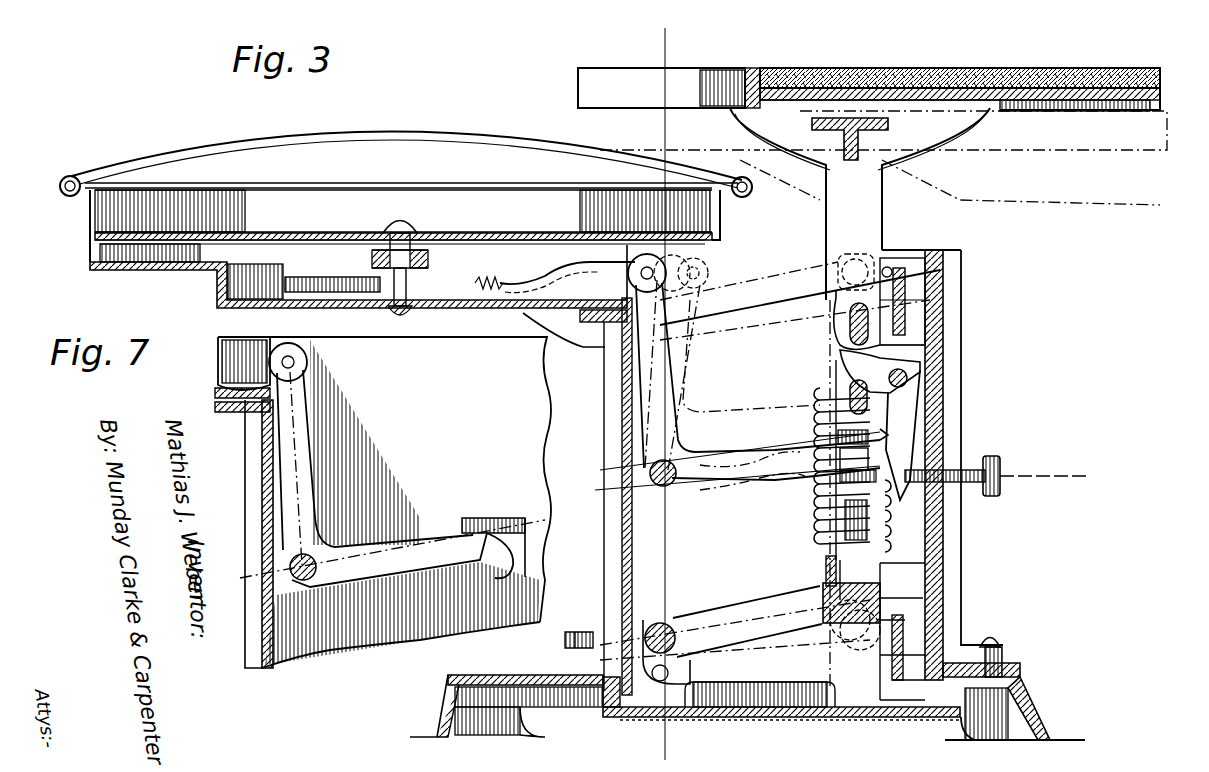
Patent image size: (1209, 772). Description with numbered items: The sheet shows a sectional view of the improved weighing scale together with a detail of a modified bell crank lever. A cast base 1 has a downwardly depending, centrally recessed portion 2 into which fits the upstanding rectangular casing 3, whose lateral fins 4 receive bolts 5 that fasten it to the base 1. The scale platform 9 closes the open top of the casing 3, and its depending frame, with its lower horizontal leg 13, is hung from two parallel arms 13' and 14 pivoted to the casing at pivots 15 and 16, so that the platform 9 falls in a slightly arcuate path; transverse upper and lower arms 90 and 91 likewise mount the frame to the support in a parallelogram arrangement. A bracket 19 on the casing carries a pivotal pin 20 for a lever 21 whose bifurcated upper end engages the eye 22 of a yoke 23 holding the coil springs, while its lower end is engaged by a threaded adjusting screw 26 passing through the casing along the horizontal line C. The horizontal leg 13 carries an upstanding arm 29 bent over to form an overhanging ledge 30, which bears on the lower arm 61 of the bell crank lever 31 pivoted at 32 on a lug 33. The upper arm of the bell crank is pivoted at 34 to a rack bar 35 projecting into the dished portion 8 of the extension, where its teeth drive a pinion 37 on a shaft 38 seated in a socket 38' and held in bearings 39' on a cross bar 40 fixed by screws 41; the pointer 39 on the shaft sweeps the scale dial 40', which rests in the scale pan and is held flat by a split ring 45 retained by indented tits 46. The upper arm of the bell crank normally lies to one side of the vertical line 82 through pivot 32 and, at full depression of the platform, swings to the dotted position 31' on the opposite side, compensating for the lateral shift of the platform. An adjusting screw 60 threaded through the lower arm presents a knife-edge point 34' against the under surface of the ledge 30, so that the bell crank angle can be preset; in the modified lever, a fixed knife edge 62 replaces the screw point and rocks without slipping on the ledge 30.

In FIG. 3, the base 1 is at (1045, 707).
In FIG. 3, the centrally recessed portion 2 is at (743, 713).
In FIG. 3, the casing 3 is at (943, 575).
In FIG. 3, the lateral fins 4 is at (977, 667).
In FIG. 3, the bolts 5 is at (988, 637).
In FIG. 3, the dished portion 8 is at (222, 283).
In FIG. 3, the scale platform 9 is at (1162, 97).
In FIG. 3, the lower horizontal leg 13 is at (841, 676).
In FIG. 3, the parallel arm 13' is at (945, 297).
In FIG. 3, the parallel arm 14 is at (903, 627).
In FIG. 3, the pivot 15 is at (912, 318).
In FIG. 3, the pivot 16 is at (880, 655).
In FIG. 3, the bracket 19 is at (918, 365).
In FIG. 3, the pivotal pin 20 is at (908, 378).
In FIG. 3, the lever 21 is at (905, 418).
In FIG. 3, the eye 22 is at (838, 333).
In FIG. 3, the yoke 23 is at (848, 319).
In FIG. 3, the threaded adjusting screw 26 is at (963, 476).
In FIG. 3, the upstanding arm 29 is at (820, 572).
In FIG. 3, the overhanging ledge 30 is at (820, 430).
In FIG. 7, the overhanging ledge 30 is at (483, 523).
In FIG. 3, the bell crank lever 31 is at (727, 380).
In FIG. 7, the bell crank lever 31 is at (375, 460).
In FIG. 3, the bell crank lever shifted position 31' is at (744, 377).
In FIG. 3, the bell crank pivot 32 is at (650, 478).
In FIG. 7, the bell crank pivot 32 is at (316, 569).
In FIG. 3, the lug 33 is at (630, 512).
In FIG. 3, the rack bar pivot 34 is at (635, 319).
In FIG. 7, the rack bar pivot 34 is at (312, 362).
In FIG. 3, the screw point 34' is at (828, 400).
In FIG. 3, the rack bar 35 is at (556, 270).
In FIG. 3, the pinion 37 is at (368, 262).
In FIG. 3, the shaft 38 is at (412, 232).
In FIG. 3, the socket 38' is at (367, 301).
In FIG. 3, the pointer 39 is at (400, 194).
In FIG. 3, the bearings 39' is at (418, 258).
In FIG. 3, the cross bar 40 is at (422, 265).
In FIG. 3, the scale dial 40' is at (407, 174).
In FIG. 3, the scale pan 41 is at (95, 244).
In FIG. 3, the split ring 45 is at (100, 232).
In FIG. 3, the indented tits 46 is at (90, 228).
In FIG. 3, the adjusting screw 60 is at (815, 500).
In FIG. 3, the lower arm of bell crank lever 61 is at (745, 452).
In FIG. 7, the lower arm of bell crank lever 61 is at (390, 560).
In FIG. 7, the knife edge point 62 is at (490, 570).
In FIG. 3, the vertical line 82 is at (666, 42).
In FIG. 3, the upper arm 90 is at (785, 265).
In FIG. 3, the lower arm 91 is at (722, 614).
In FIG. 3, the center line C is at (1051, 476).